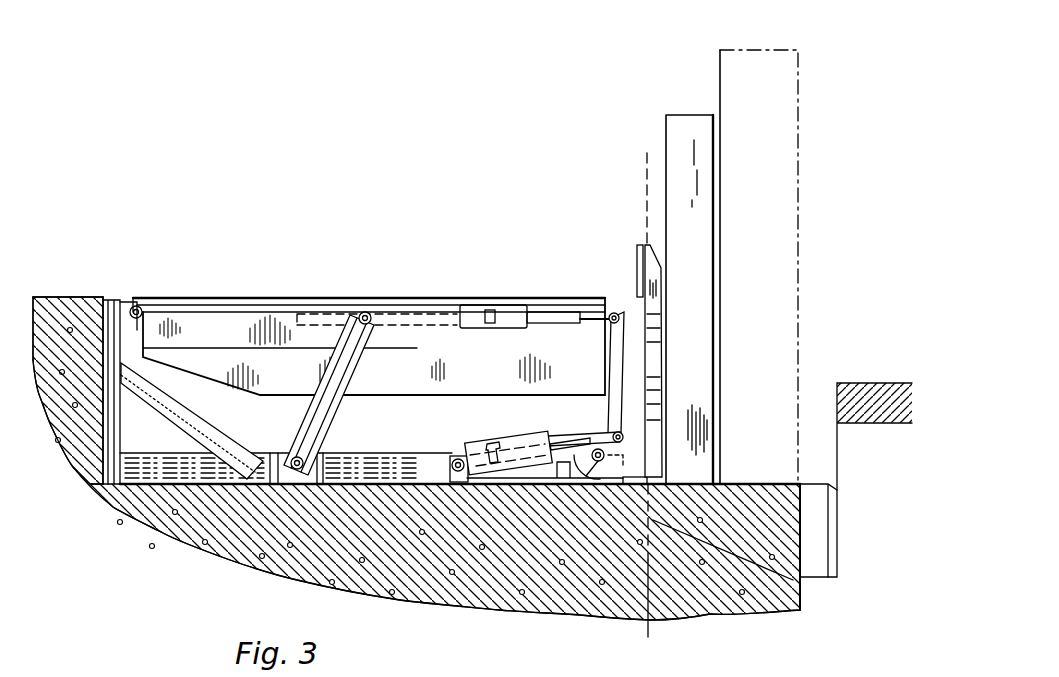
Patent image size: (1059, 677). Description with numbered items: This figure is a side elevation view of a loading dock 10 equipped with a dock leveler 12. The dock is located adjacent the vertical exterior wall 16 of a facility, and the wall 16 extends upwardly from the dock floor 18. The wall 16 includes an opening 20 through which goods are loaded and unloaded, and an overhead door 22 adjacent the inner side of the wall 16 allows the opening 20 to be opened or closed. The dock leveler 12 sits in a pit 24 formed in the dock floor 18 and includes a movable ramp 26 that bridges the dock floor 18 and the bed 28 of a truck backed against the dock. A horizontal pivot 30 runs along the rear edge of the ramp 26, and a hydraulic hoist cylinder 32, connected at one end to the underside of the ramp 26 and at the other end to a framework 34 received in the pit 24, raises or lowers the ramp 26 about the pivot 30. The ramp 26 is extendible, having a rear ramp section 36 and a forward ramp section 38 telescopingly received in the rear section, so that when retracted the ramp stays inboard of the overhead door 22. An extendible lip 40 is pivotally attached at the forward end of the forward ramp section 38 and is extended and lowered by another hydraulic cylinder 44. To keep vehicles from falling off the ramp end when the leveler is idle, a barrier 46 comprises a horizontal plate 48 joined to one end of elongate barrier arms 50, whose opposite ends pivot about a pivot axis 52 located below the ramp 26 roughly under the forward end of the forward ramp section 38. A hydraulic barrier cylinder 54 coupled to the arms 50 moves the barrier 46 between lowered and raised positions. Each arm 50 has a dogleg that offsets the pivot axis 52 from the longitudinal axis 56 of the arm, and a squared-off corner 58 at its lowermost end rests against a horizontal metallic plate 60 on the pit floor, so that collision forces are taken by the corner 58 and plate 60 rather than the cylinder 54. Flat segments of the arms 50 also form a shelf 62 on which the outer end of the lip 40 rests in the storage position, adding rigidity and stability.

The loading dock 10 is at (872, 162).
The dock leveler 12 is at (332, 158).
The vertical exterior wall 16 is at (815, 71).
The dock floor 18 is at (103, 297).
The opening 20 is at (752, 105).
The overhead door 22 is at (668, 127).
The pit 24 is at (167, 473).
The movable ramp 26 is at (298, 298).
The bed 28 is at (845, 383).
The horizontal pivot 30 is at (137, 306).
The hydraulic hoist cylinder 32 is at (312, 407).
The framework 34 is at (265, 482).
The rear ramp section 36 is at (228, 298).
The forward ramp section 38 is at (413, 298).
The extendible lip 40 is at (621, 374).
The hydraulic cylinder 44 is at (491, 298).
The barrier 46 is at (661, 264).
The horizontal plate 48 is at (637, 258).
The barrier arm 50 is at (650, 314).
The pivot axis 52 is at (556, 484).
The hydraulic barrier cylinder 54 is at (490, 445).
The longitudinal axis 56 is at (645, 598).
The squared-off corner 58 is at (650, 490).
The metallic plate 60 is at (630, 482).
The shelf 62 is at (597, 432).